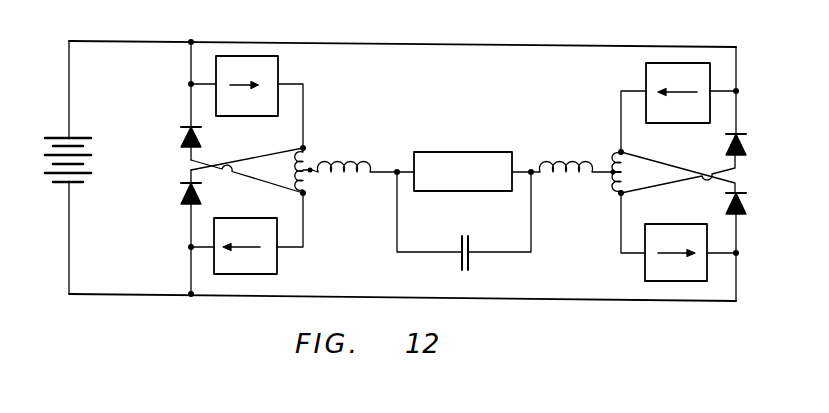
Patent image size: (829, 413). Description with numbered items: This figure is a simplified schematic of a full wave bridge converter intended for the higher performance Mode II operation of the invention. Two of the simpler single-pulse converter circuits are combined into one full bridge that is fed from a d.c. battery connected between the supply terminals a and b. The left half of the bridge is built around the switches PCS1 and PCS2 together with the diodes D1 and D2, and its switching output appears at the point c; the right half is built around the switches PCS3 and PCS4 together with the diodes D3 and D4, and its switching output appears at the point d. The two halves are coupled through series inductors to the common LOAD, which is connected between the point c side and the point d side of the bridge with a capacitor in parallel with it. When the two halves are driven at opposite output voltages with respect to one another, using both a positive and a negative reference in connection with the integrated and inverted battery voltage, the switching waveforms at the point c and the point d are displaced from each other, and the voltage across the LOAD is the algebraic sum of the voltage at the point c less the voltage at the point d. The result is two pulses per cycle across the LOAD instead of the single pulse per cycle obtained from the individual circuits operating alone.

The positive supply terminal a is at (402, 78).
The negative supply terminal b is at (402, 250).
The point c is at (298, 170).
The point d is at (626, 172).
The diode D1 is at (177, 191).
The diode D2 is at (174, 143).
The diode D3 is at (753, 204).
The diode D4 is at (753, 145).
The power controlled switch 1 PCS1 is at (247, 102).
The power controlled switch 2 PCS2 is at (247, 233).
The power controlled switch 3 PCS3 is at (678, 107).
The power controlled switch 4 PCS4 is at (678, 237).
The load LOAD is at (464, 171).